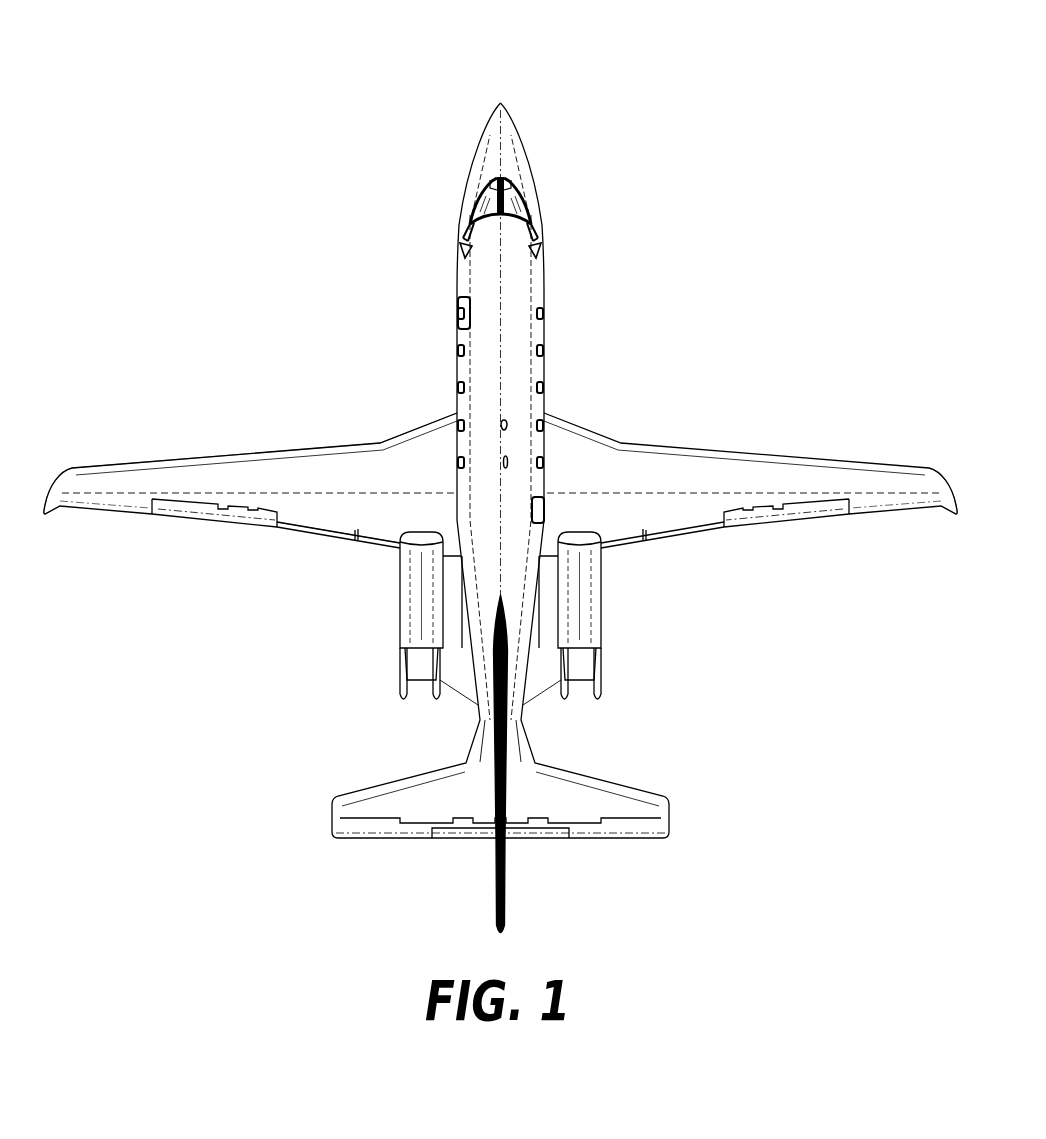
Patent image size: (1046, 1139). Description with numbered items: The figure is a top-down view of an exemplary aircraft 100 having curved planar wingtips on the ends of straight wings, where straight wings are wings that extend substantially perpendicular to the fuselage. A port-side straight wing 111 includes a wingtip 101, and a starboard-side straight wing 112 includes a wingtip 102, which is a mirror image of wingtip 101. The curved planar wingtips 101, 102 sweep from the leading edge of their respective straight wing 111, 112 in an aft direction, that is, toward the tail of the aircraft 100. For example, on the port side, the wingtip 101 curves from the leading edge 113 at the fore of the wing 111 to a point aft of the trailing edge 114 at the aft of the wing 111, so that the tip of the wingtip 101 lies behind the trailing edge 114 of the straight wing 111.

The aircraft 100 is at (500, 475).
The wingtip 101 is at (60, 518).
The wingtip 102 is at (942, 518).
The port-side straight wing 111 is at (250, 493).
The starboard-side straight wing 112 is at (750, 493).
The leading edge 113 is at (327, 444).
The trailing edge 114 is at (334, 546).